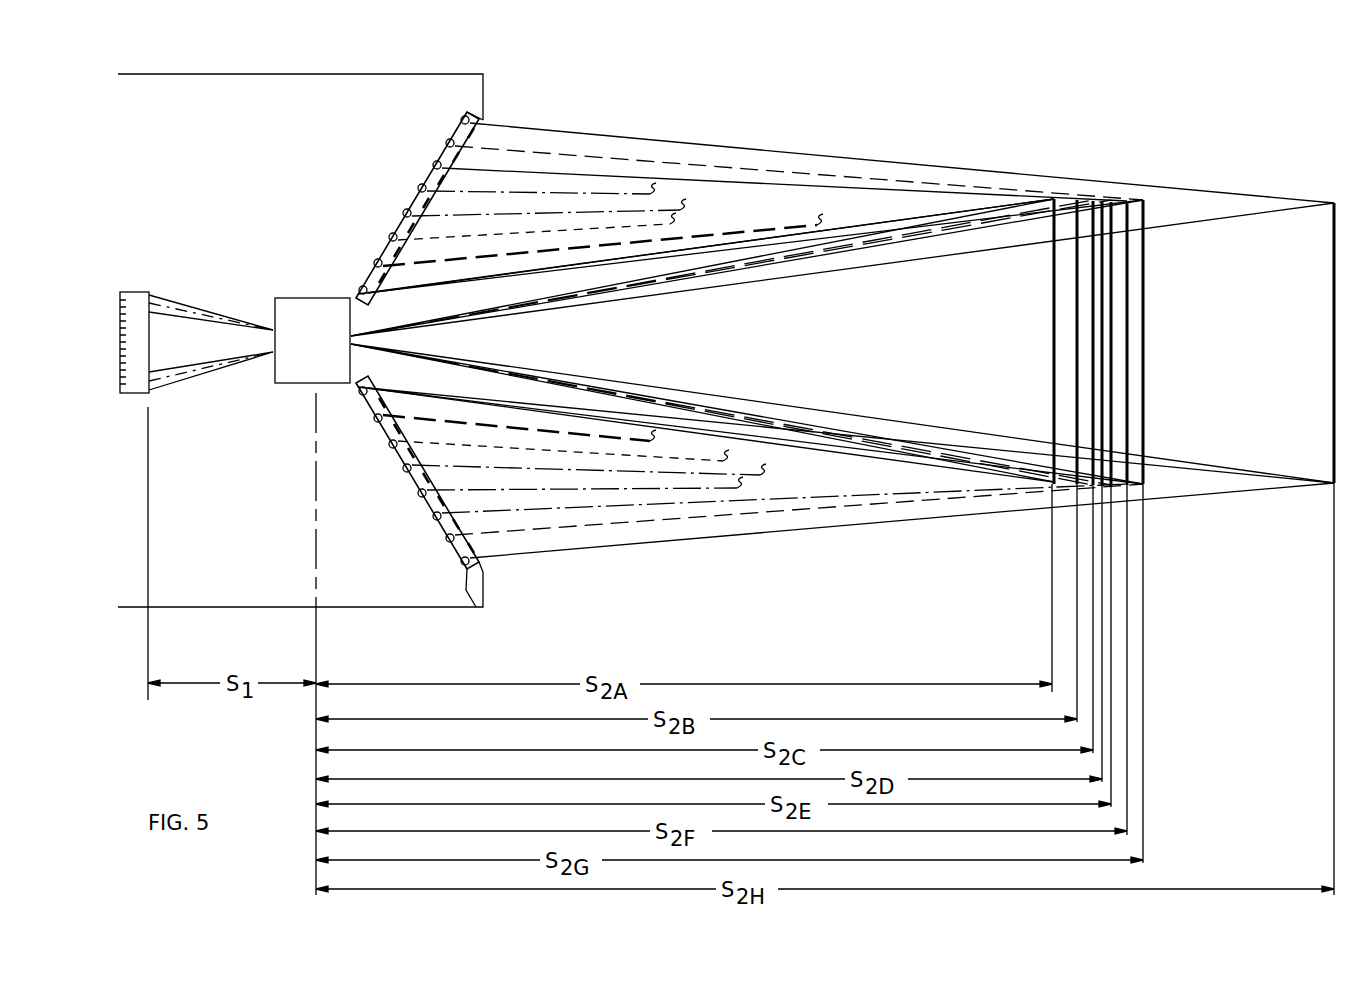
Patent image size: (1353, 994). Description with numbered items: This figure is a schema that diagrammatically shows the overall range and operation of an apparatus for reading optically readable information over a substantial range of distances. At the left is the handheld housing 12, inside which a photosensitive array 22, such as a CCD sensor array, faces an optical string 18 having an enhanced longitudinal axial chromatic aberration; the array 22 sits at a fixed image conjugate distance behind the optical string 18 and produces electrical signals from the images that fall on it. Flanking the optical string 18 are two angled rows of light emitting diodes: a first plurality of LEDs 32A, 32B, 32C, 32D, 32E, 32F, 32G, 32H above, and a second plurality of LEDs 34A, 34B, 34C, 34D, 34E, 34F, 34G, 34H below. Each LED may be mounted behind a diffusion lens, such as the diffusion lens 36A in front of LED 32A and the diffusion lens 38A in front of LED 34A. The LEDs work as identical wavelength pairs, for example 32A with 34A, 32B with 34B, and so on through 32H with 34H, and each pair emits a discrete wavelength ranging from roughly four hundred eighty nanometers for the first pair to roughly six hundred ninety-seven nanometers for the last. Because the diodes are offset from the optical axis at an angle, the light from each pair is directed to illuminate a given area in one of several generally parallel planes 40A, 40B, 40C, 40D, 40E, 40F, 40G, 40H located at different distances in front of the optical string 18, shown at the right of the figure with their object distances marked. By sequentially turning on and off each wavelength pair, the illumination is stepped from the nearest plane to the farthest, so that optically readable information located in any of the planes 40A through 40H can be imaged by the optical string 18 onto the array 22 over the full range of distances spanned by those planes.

The housing 12 is at (245, 578).
The optical string 18 is at (287, 368).
The photosensitive array 22 is at (137, 372).
The light emitting diode 32A is at (478, 118).
The light emitting diode 32B is at (445, 140).
The light emitting diode 32C is at (428, 163).
The light emitting diode 32D is at (415, 188).
The light emitting diode 32E is at (402, 214).
The light emitting diode 32F is at (388, 240).
The light emitting diode 32G is at (373, 265).
The light emitting diode 32H is at (360, 292).
The light emitting diode 34A is at (463, 570).
The light emitting diode 34B is at (470, 545).
The light emitting diode 34C is at (435, 510).
The light emitting diode 34D is at (417, 498).
The light emitting diode 34E is at (403, 468).
The light emitting diode 34F is at (388, 445).
The light emitting diode 34G is at (373, 420).
The light emitting diode 34H is at (358, 395).
The diffusion lens 36A is at (470, 143).
The diffusion lens 38A is at (480, 560).
The illuminated plane 40A is at (1334, 202).
The illuminated plane 40B is at (1143, 200).
The illuminated plane 40C is at (1128, 200).
The illuminated plane 40D is at (1111, 200).
The illuminated plane 40E is at (1100, 290).
The illuminated plane 40F is at (1078, 198).
The illuminated plane 40G is at (1053, 342).
The illuminated plane 40H is at (1094, 200).